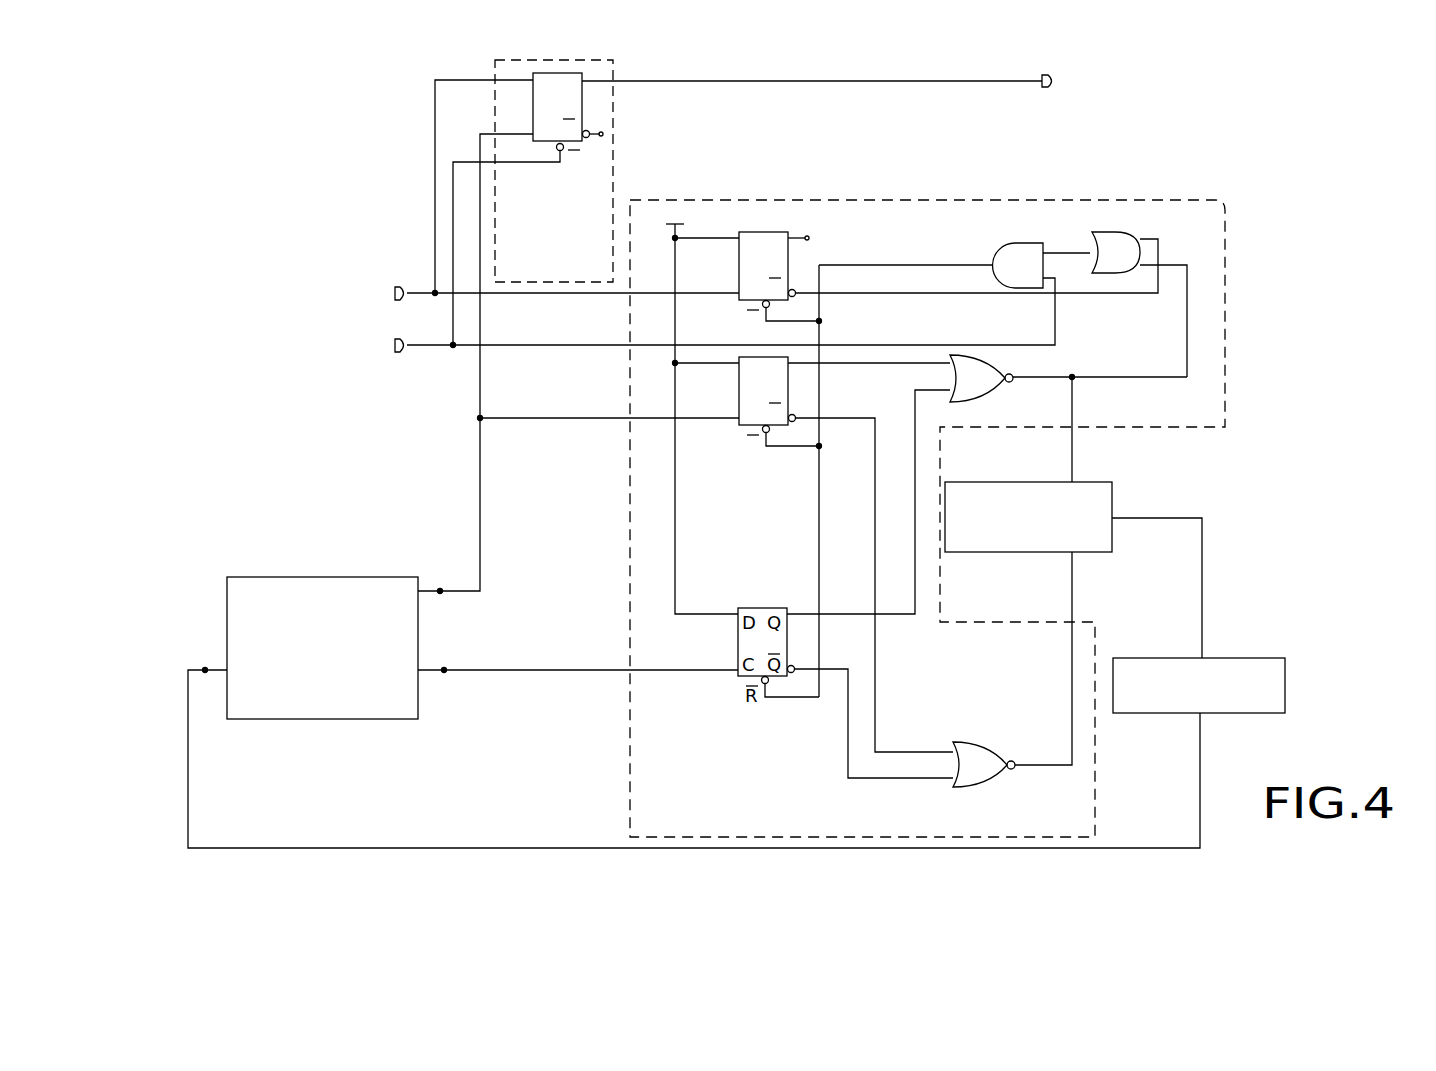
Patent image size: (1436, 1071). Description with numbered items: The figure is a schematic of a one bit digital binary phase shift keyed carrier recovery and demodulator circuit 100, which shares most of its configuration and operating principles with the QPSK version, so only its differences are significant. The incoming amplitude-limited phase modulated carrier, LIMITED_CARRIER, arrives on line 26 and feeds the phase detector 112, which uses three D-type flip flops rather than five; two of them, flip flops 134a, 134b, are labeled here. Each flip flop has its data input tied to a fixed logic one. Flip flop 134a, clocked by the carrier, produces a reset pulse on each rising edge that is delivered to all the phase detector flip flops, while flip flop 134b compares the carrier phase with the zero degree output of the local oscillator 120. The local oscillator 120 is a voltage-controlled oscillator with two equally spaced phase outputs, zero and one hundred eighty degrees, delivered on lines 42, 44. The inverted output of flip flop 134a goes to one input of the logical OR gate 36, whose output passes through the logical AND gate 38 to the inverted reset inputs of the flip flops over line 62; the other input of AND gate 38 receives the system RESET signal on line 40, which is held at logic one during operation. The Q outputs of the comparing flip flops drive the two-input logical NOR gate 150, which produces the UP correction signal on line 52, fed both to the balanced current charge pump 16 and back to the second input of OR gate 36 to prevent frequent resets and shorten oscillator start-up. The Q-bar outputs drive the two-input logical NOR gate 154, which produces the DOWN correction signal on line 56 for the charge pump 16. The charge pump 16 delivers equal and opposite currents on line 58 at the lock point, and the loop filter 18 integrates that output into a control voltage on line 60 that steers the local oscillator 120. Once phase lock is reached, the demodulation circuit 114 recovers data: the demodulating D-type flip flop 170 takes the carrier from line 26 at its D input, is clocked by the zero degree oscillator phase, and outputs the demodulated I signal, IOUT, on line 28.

The carrier recovery and demodulator circuit 100 is at (308, 134).
The line 26 is at (422, 290).
The line 40 is at (427, 347).
The demodulation circuit 114 is at (613, 113).
The demodulating D-type flip flop 170 is at (533, 129).
The line 42 is at (477, 485).
The line 28 is at (875, 82).
The phase detector 112 is at (630, 510).
The D-type flip flop 134a is at (739, 288).
The D-type flip flop 134b is at (739, 402).
The line 62 is at (882, 265).
The logical AND gate 38 is at (993, 254).
The logical OR gate 36 is at (1112, 233).
The two-input logical NOR gate 150 is at (1001, 426).
The line 52 is at (1025, 380).
The balanced current charge pump 16 is at (1112, 540).
The line 58 is at (1150, 519).
The line 56 is at (1070, 688).
The two-input logical NOR gate 154 is at (985, 743).
The loop filter 18 is at (1168, 713).
The line 60 is at (1200, 800).
The local oscillator 120 is at (322, 719).
The line 44 is at (585, 670).